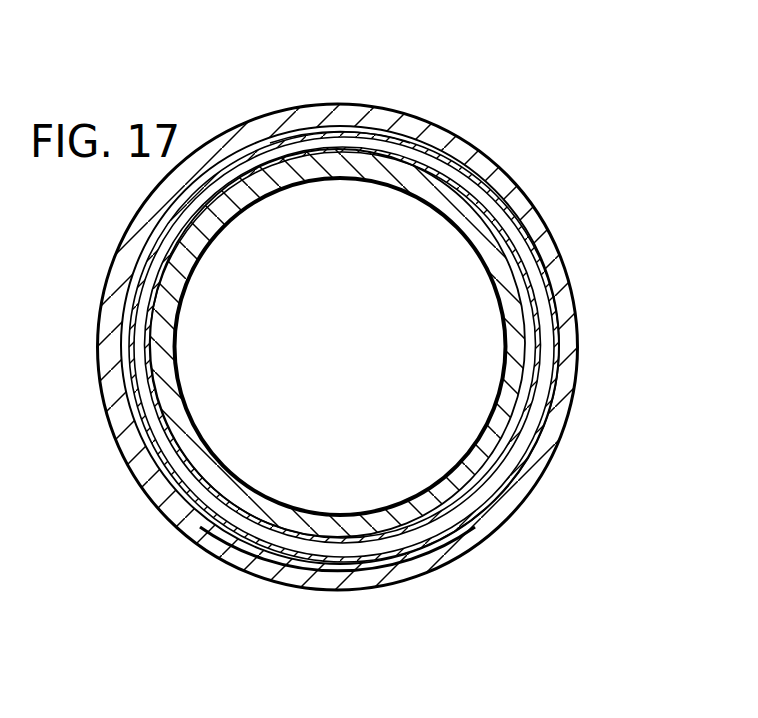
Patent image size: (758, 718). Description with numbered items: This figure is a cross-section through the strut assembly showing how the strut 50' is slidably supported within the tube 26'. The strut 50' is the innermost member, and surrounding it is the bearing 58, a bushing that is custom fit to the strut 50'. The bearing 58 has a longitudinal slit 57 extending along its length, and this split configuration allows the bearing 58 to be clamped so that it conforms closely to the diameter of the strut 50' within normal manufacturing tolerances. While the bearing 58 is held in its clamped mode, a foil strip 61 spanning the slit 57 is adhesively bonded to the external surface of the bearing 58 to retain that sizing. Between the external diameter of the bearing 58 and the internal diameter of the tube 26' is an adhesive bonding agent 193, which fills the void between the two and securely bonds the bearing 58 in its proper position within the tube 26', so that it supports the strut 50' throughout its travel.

The adhesive bonding agent 193 is at (392, 135).
The tube 26' is at (352, 347).
The upper bearing 58 is at (566, 247).
The strut 50' is at (431, 343).
The longitudinal slit 57 is at (343, 540).
The foil strip 61 is at (372, 562).